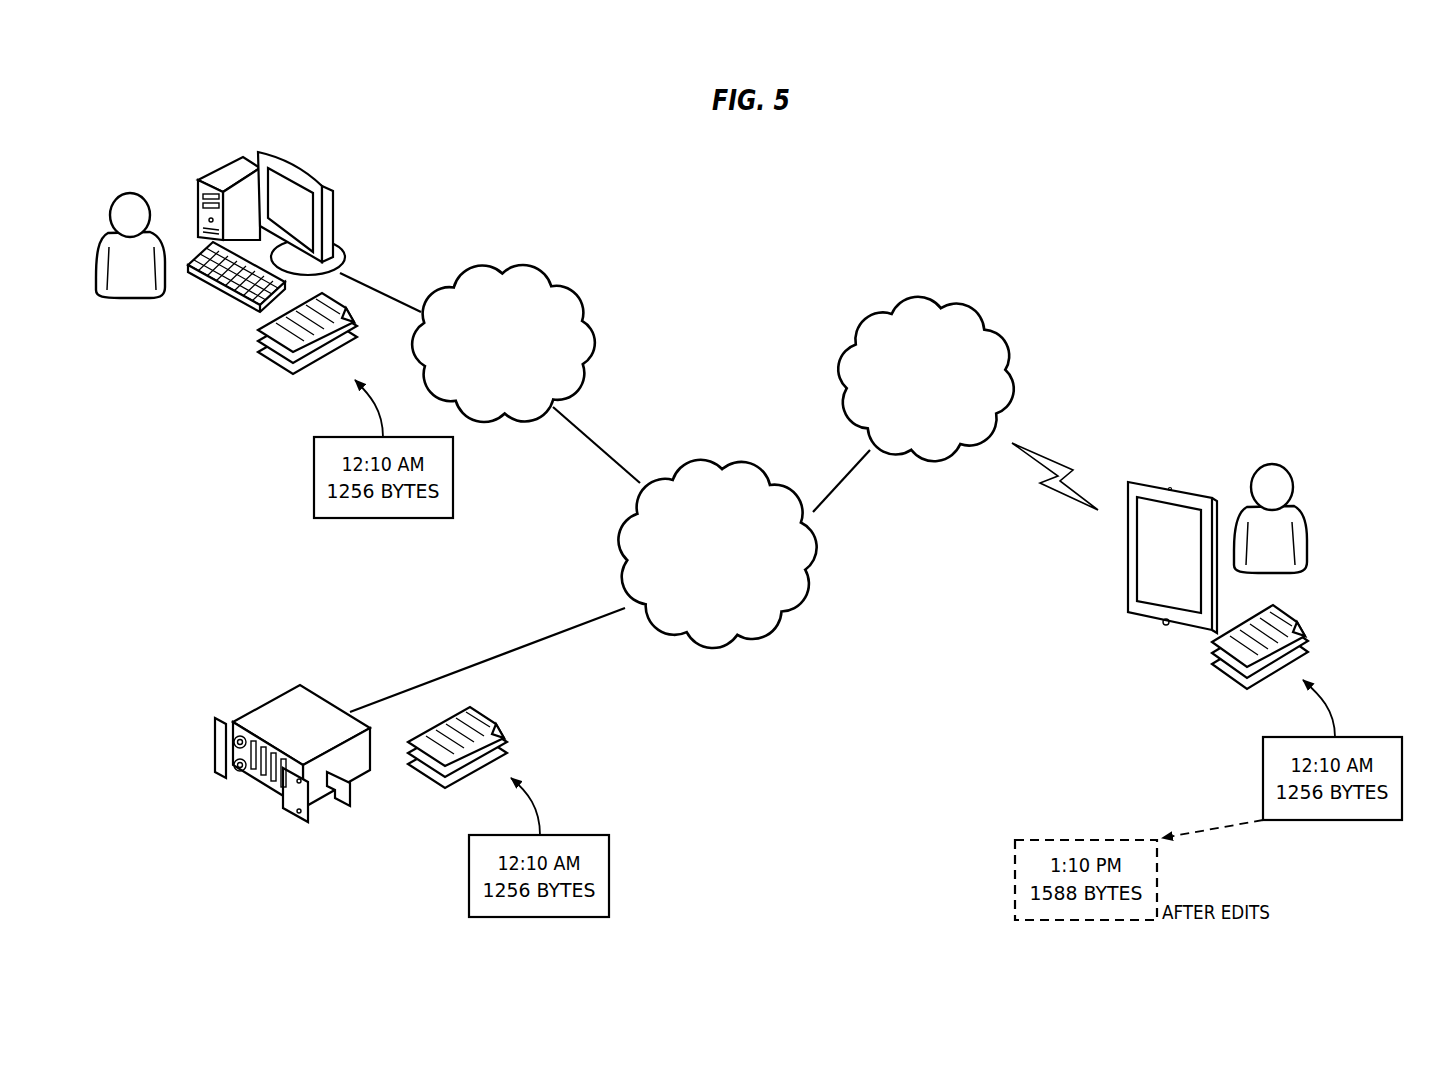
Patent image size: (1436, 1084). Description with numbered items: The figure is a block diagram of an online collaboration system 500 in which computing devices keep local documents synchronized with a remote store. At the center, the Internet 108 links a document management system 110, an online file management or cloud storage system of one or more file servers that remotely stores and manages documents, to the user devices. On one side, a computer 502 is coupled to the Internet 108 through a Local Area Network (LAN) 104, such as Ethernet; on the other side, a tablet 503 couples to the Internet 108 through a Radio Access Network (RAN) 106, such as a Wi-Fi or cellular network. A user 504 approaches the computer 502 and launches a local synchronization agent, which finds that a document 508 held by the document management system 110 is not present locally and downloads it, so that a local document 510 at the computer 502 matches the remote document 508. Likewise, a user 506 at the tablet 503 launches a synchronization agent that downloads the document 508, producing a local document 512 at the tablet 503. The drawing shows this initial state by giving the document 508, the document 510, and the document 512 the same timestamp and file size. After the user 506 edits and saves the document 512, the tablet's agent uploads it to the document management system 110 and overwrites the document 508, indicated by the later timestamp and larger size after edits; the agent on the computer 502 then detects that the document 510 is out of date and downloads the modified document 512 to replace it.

The online collaboration system 500 is at (1113, 190).
The computer 502 is at (306, 158).
The tablet 503 is at (1182, 488).
The user 504 is at (130, 205).
The user 506 is at (1307, 516).
The document 508 is at (491, 712).
The local document 510 is at (272, 368).
The local document 512 is at (1228, 680).
The Local Area Network (LAN) 104 is at (519, 373).
The Radio Access Network (RAN) 106 is at (942, 403).
The Internet 108 is at (732, 581).
The document management system 110 is at (293, 698).